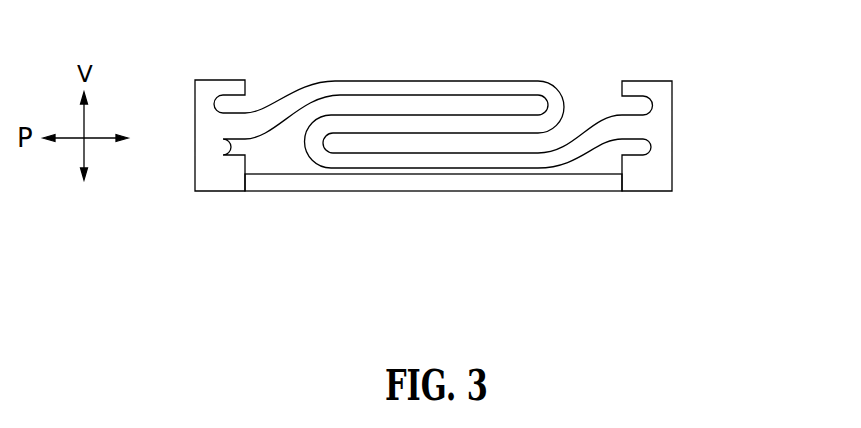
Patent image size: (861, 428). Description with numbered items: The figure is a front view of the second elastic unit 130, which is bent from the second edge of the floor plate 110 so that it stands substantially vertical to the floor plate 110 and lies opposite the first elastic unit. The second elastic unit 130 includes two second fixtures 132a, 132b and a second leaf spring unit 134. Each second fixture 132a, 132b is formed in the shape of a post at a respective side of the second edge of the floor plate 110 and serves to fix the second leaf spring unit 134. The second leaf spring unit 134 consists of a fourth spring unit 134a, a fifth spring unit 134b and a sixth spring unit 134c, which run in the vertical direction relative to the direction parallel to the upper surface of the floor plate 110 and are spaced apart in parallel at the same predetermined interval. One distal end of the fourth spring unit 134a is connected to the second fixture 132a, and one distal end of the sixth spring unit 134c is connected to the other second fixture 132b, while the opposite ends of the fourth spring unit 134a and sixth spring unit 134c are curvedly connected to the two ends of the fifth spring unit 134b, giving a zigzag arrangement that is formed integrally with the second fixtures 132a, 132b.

The floor plate 110 is at (548, 183).
The second elastic unit 130 is at (688, 131).
The second fixture 132a is at (208, 90).
The second fixture 132b is at (652, 87).
The second leaf spring unit 134 is at (296, 160).
The fourth spring unit 134a is at (512, 88).
The fifth spring unit 134b is at (441, 120).
The sixth spring unit 134c is at (463, 164).